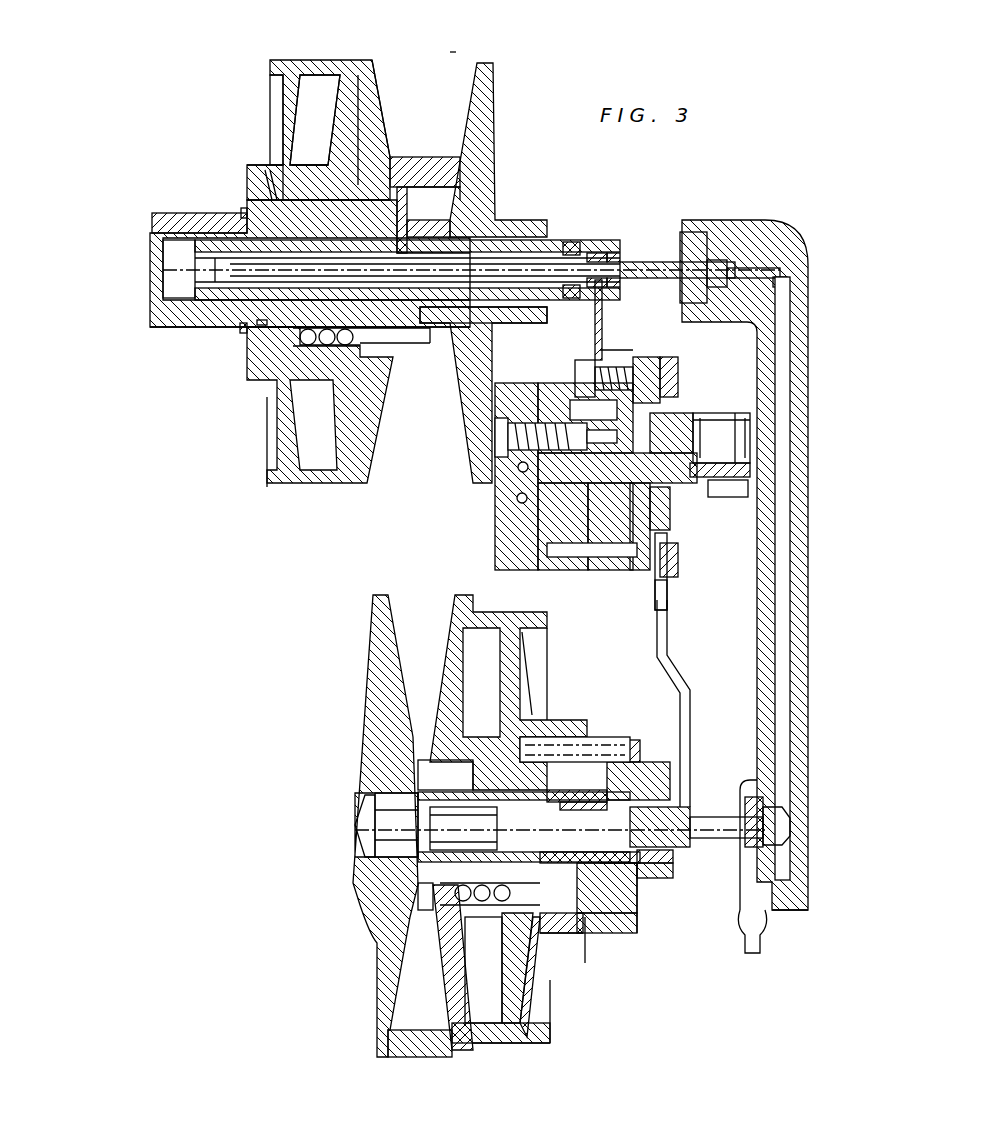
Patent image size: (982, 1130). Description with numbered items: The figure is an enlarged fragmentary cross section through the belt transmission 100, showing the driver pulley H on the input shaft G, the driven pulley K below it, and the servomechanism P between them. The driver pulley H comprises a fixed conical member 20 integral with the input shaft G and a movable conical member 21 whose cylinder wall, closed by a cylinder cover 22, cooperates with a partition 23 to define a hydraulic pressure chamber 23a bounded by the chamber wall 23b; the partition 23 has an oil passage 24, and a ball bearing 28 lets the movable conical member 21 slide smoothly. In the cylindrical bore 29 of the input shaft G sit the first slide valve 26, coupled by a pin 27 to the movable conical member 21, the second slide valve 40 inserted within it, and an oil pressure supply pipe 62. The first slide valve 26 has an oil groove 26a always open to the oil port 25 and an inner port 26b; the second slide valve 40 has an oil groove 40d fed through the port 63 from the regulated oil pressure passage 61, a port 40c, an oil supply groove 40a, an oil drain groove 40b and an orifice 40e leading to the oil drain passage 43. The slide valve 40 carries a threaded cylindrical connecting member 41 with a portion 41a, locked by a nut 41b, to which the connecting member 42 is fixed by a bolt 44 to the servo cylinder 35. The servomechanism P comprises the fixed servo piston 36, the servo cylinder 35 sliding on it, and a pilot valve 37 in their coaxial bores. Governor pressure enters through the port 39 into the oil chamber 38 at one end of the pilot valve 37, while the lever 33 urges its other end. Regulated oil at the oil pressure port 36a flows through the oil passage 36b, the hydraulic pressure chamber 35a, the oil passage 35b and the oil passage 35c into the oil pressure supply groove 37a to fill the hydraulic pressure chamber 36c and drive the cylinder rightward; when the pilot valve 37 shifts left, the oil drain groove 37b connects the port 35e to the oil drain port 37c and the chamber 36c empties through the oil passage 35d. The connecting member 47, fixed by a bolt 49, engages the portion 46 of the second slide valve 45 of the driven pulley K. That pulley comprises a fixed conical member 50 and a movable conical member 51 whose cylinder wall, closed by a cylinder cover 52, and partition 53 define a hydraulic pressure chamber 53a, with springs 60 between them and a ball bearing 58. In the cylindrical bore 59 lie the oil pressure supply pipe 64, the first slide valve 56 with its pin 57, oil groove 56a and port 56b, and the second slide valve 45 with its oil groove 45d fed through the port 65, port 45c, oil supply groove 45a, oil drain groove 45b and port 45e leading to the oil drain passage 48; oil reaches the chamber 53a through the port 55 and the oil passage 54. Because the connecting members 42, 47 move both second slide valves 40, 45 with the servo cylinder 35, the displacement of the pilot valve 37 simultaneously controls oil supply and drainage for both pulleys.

The fixed conical member 20 is at (495, 92).
The movable conical member 21 is at (338, 75).
The cylinder cover 22 is at (282, 77).
The partition 23 is at (370, 78).
The hydraulic pressure chamber 23a is at (360, 107).
The chamber wall 23b is at (318, 90).
The oil passage 24 is at (278, 173).
The oil port 25 is at (275, 187).
The first slide valve 26 is at (445, 242).
The oil groove 26a is at (242, 215).
The port 26b is at (243, 330).
The pin 27 is at (415, 223).
The ball bearing 28 is at (373, 357).
The cylindrical bore 29 is at (520, 307).
The lever 33 is at (750, 472).
The servo cylinder 35 is at (663, 513).
The hydraulic pressure chamber 35a is at (627, 513).
The oil passage 35b is at (668, 590).
The oil passage 35c is at (667, 533).
The oil passage 35d is at (650, 415).
The port 35e is at (692, 453).
The servo piston 36 is at (500, 530).
The oil pressure port 36a is at (517, 500).
The oil passage 36b is at (590, 510).
The hydraulic pressure chamber 36c is at (637, 498).
The pilot valve 37 is at (700, 468).
The oil pressure supply groove 37a is at (643, 390).
The oil drain groove 37b is at (707, 453).
The oil drain port 37c is at (728, 462).
The oil chamber 38 is at (537, 478).
The port 39 is at (527, 467).
The second slide valve 40 is at (553, 253).
The oil supply groove 40a is at (240, 215).
The oil drain groove 40b is at (247, 378).
The port 40c is at (213, 262).
The oil groove 40d is at (247, 324).
The orifice 40e is at (400, 160).
The cylindrical connecting member 41 is at (617, 258).
The portion 41a is at (607, 253).
The nut 41b is at (580, 243).
The connecting member 42 is at (603, 312).
The oil drain passage 43 is at (408, 196).
The bolt 44 is at (582, 380).
The second slide valve 45 is at (688, 795).
The oil supply groove 45a is at (583, 892).
The oil drain groove 45b is at (490, 790).
The port 45c is at (565, 930).
The oil groove 45d is at (640, 877).
The port 45e is at (497, 813).
The portion 46 is at (688, 807).
The connecting member 47 is at (690, 717).
The oil drain passage 48 is at (497, 837).
The bolt 49 is at (678, 557).
The fixed conical member 50 is at (382, 1043).
The movable conical member 51 is at (463, 1050).
The cylinder cover 52 is at (533, 1037).
The partition 53 is at (513, 967).
The hydraulic pressure chamber 53a is at (478, 997).
The oil passage 54 is at (590, 887).
The port 55 is at (590, 790).
The first slide valve 56 is at (662, 798).
The oil groove 56a is at (642, 740).
The port 56b is at (570, 800).
The pin 57 is at (420, 813).
The ball bearing 58 is at (433, 910).
The cylindrical bore 59 is at (673, 855).
The springs 60 is at (543, 743).
The regulated oil pressure passage 61 is at (782, 348).
The oil pressure supply pipe 62 is at (650, 267).
The port 63 is at (330, 247).
The oil pressure supply pipe 64 is at (747, 803).
The port 65 is at (653, 882).
The transmission 100 is at (688, 980).
The input shaft G is at (153, 313).
The driver pulley H is at (452, 52).
The servomechanism P is at (632, 345).
The driven pulley K is at (489, 1049).